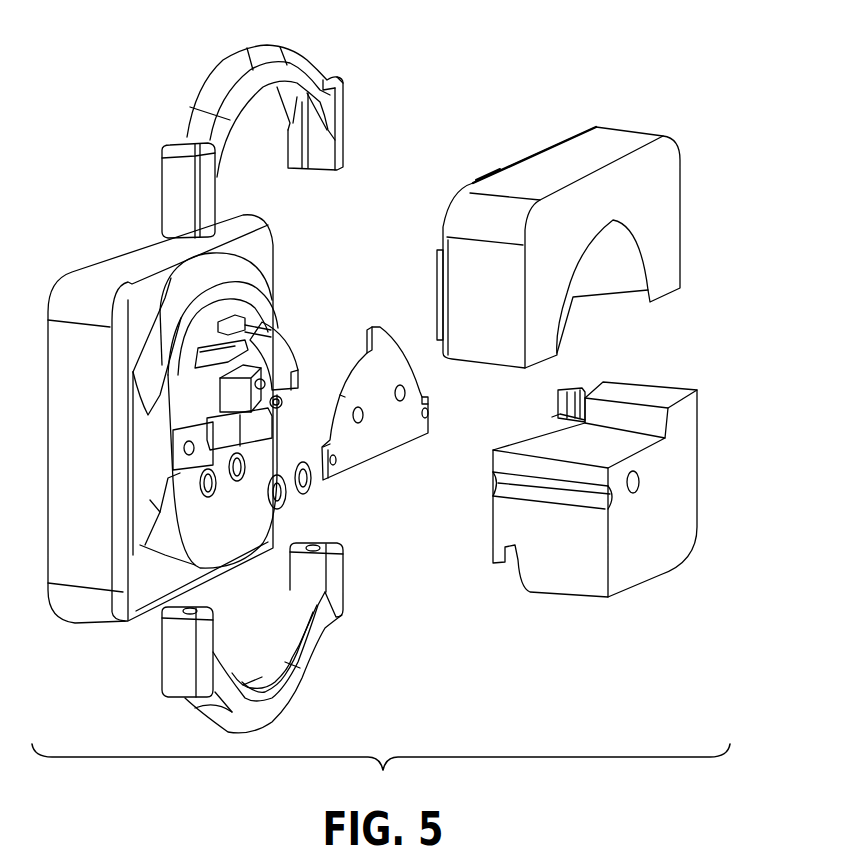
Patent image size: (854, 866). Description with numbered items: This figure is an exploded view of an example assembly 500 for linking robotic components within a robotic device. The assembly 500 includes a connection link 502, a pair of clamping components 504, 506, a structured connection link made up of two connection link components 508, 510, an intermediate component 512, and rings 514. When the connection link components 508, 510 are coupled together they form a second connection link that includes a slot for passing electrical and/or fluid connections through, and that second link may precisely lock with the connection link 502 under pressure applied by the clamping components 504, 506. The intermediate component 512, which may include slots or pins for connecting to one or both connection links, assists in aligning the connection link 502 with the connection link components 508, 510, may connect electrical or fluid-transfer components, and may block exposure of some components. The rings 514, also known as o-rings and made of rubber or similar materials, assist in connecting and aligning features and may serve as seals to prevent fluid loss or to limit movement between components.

The example assembly 500 is at (416, 140).
The connection link 502 is at (118, 250).
The clamping component 504 is at (221, 80).
The clamping component 506 is at (177, 661).
The connection link component 508 is at (610, 140).
The connection link component 510 is at (652, 576).
The intermediate component 512 is at (397, 450).
The rings 514 is at (310, 494).